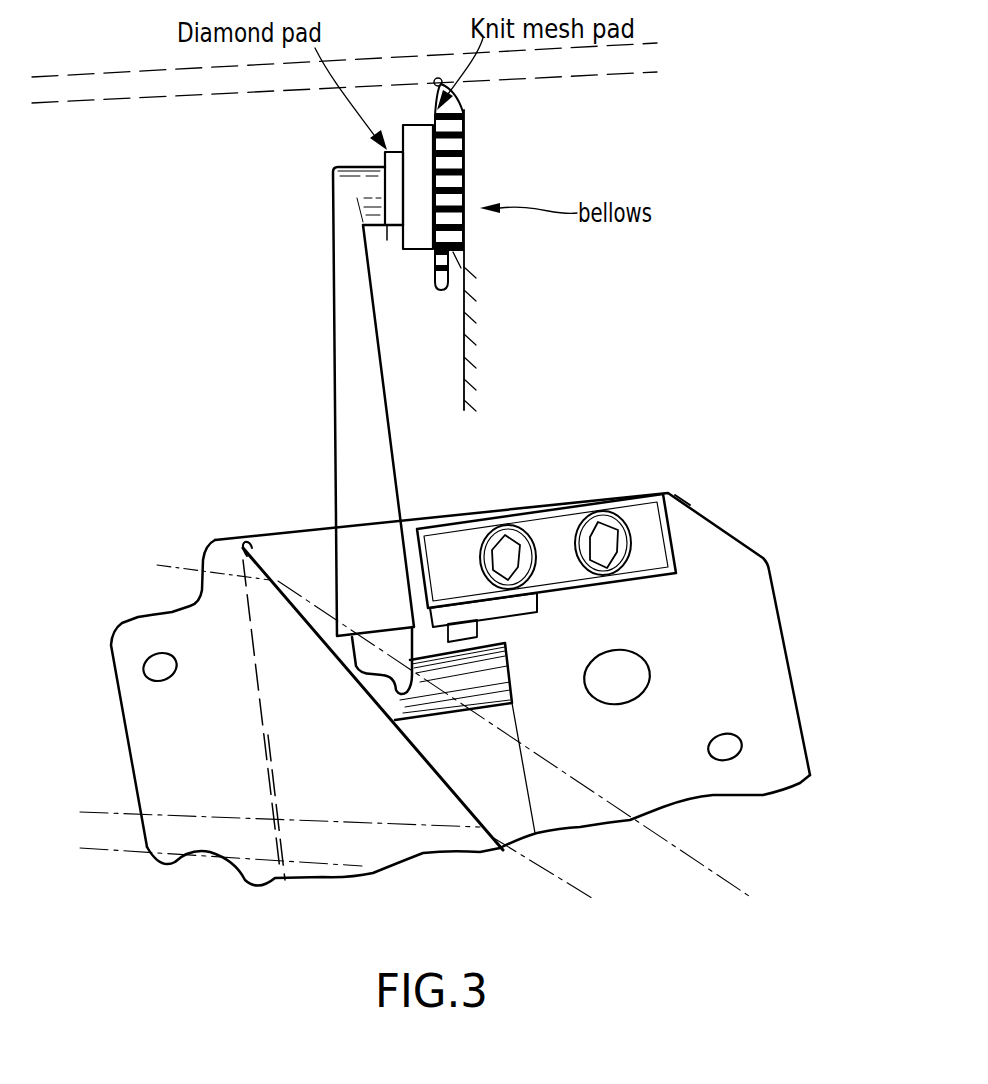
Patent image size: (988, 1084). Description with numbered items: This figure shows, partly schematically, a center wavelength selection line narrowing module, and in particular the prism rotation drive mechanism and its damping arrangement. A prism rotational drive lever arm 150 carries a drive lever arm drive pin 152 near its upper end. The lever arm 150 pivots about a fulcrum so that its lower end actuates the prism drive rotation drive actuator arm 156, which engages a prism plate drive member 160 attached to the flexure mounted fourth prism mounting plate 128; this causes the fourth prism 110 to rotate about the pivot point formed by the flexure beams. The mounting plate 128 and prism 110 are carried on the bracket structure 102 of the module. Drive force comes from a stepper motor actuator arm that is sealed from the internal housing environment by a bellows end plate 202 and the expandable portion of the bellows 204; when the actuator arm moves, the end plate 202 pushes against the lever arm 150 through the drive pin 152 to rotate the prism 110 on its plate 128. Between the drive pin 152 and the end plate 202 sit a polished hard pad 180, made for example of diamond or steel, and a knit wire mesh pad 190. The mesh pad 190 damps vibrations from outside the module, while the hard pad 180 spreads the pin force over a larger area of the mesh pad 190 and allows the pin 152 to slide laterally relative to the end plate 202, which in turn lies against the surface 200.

The mounting bracket 102 is at (753, 640).
The fourth prism 110 is at (272, 623).
The fourth prism mounting plate 128 is at (510, 793).
The prism rotational drive lever arm 150 is at (350, 288).
The drive lever arm drive pin 152 is at (380, 183).
The prism drive rotation drive actuator arm 156 is at (390, 673).
The prism plate drive member 160 is at (492, 677).
The polished hard pad 180 is at (388, 228).
The knit wire mesh pad 190 is at (415, 125).
The workpiece surface 200 is at (467, 380).
The bellows end plate 202 is at (440, 177).
The bellows 204 is at (495, 246).